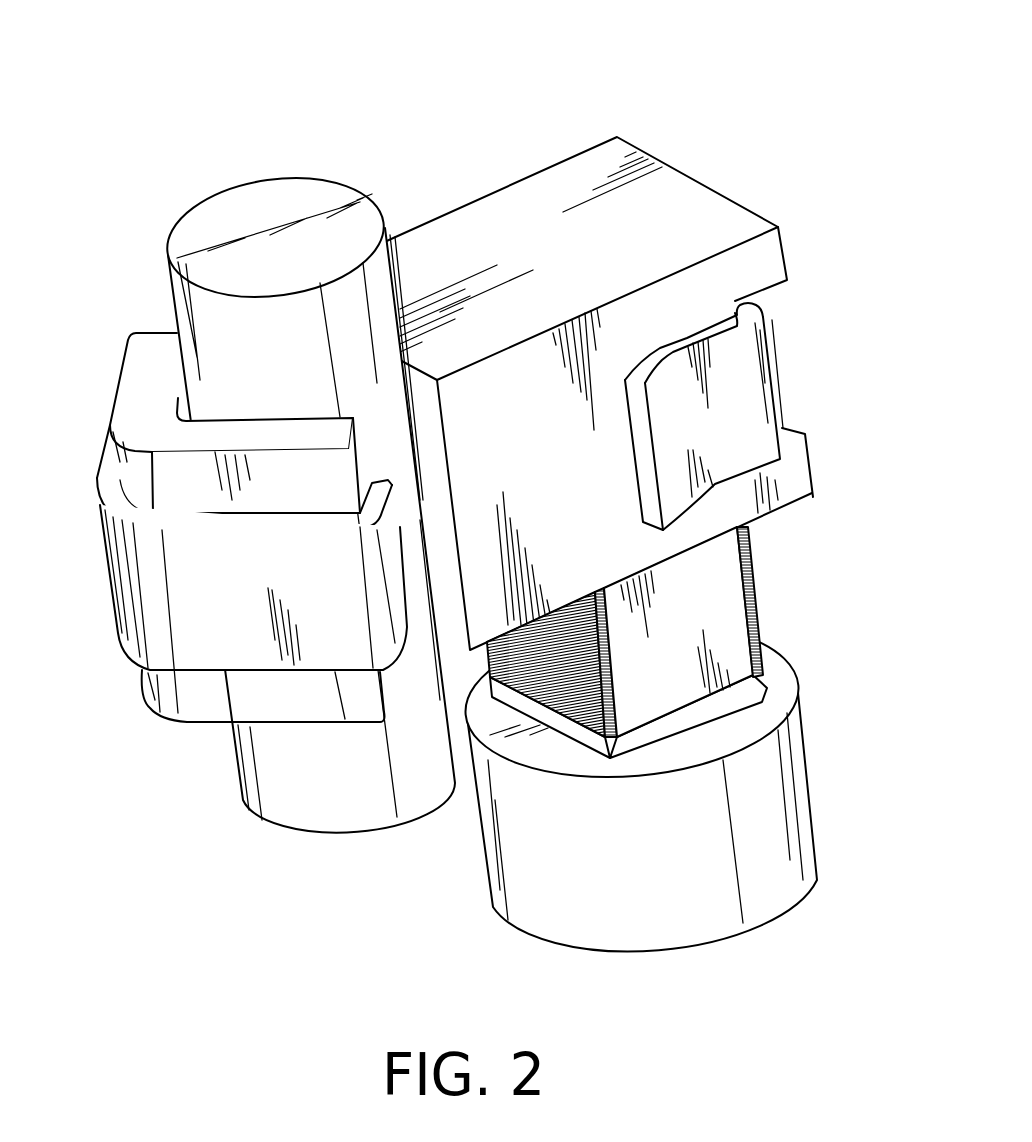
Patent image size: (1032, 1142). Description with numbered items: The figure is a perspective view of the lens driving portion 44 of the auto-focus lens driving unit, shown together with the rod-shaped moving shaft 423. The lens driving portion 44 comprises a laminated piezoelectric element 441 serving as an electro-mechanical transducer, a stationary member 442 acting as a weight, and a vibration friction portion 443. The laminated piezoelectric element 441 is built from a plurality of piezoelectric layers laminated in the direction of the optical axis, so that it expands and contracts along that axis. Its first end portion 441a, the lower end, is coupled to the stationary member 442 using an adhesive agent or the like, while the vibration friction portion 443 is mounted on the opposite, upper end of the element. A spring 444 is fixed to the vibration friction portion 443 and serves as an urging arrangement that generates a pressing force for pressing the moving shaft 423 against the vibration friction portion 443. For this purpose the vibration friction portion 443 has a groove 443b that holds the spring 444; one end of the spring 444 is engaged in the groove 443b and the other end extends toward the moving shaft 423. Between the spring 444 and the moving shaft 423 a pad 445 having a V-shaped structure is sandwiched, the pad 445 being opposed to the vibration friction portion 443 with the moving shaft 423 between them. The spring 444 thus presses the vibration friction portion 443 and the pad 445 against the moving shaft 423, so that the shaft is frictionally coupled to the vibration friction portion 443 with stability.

The lens driving portion 44 is at (545, 86).
The rod-shaped moving shaft 423 is at (187, 298).
The laminated piezoelectric element 441 is at (713, 573).
The first end portion 441a is at (778, 732).
The stationary member 442 is at (793, 797).
The vibration friction portion 443 is at (670, 192).
The groove 443b is at (800, 426).
The spring 444 is at (757, 367).
The pad 445 is at (184, 712).